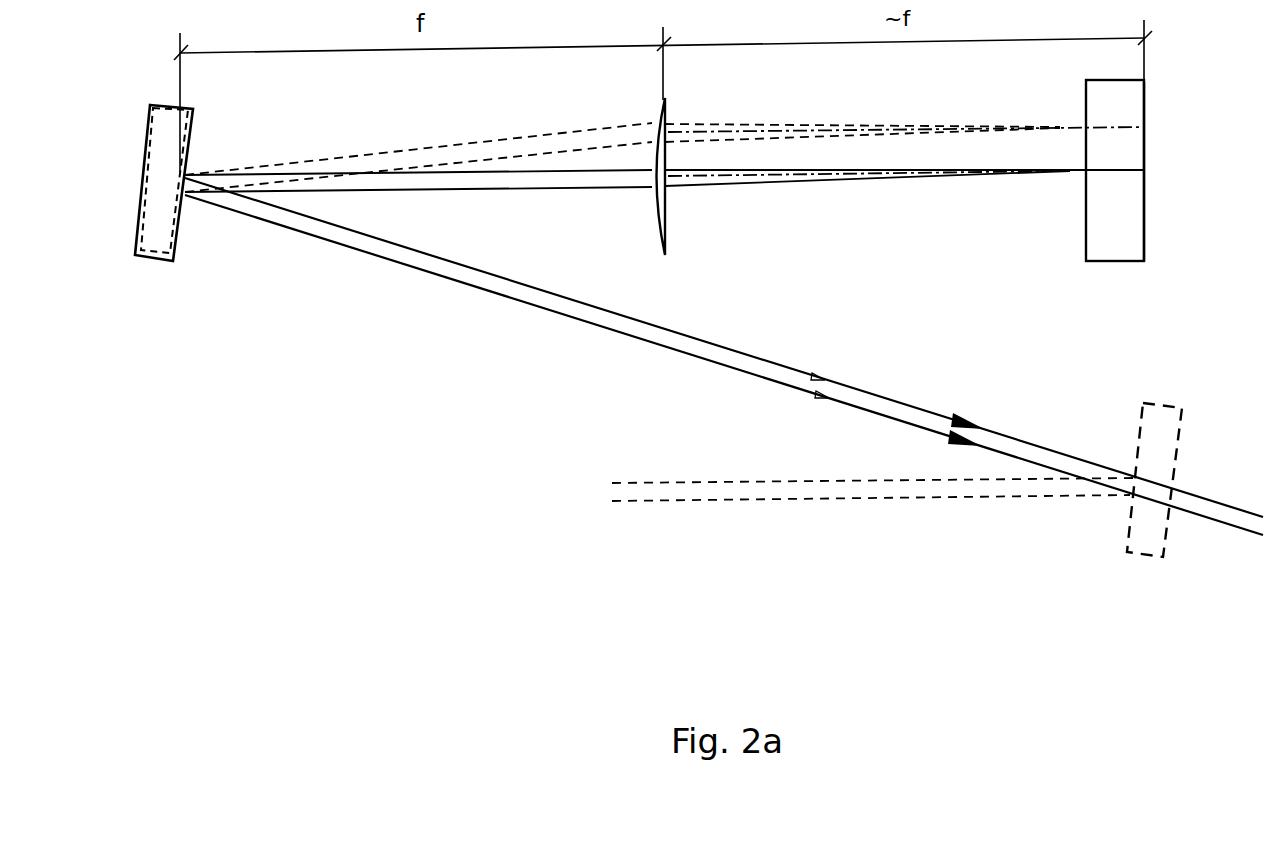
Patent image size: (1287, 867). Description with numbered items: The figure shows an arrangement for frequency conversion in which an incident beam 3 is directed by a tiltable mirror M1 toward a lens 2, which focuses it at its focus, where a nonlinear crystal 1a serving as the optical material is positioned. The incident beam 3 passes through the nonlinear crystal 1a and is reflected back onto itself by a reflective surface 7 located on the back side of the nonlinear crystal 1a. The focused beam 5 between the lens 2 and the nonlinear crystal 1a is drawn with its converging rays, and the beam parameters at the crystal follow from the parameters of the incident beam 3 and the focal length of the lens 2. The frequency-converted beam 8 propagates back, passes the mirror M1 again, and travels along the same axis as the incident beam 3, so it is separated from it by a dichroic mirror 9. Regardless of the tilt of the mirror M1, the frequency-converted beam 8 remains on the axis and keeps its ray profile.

The mirror M1 is at (160, 245).
The lens 2 is at (665, 216).
The light beam 5 is at (858, 176).
The nonlinear crystal 1a is at (1130, 220).
The reflective surface 7 is at (1148, 106).
The incident beam 3 is at (977, 412).
The frequency-converted beam 8 is at (852, 498).
The dichroic mirror 9 is at (1165, 425).